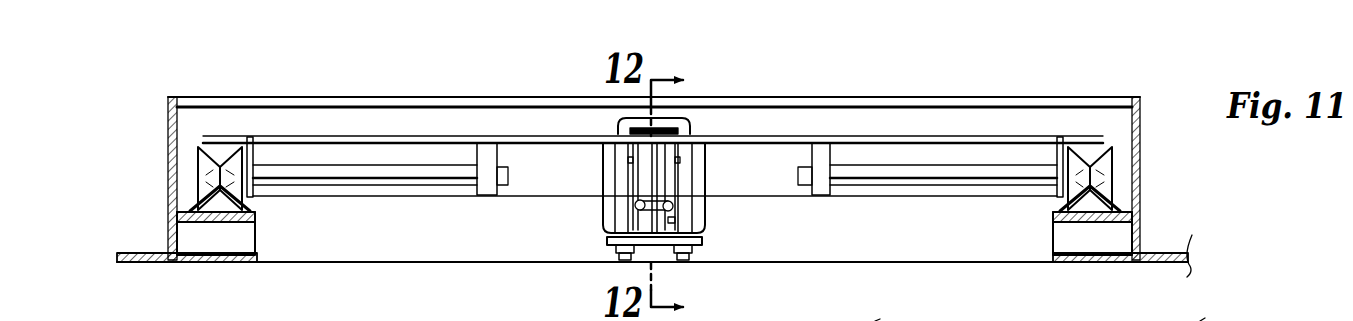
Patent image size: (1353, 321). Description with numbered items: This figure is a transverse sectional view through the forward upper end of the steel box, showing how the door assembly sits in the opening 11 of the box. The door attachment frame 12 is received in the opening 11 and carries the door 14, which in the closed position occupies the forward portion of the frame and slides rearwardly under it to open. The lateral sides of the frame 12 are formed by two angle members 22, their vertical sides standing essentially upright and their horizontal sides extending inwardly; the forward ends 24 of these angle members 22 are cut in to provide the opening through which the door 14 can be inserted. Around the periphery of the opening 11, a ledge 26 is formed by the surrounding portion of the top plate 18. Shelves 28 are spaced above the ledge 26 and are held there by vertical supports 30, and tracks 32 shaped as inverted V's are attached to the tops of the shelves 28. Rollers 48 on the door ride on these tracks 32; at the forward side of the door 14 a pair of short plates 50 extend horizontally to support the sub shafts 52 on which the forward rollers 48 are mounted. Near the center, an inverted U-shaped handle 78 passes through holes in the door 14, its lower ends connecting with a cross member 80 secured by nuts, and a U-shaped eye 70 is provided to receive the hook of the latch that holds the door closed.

The opening 11 is at (1030, 258).
The door attachment frame 12 is at (1143, 123).
The door 14 is at (922, 138).
The top plate 18 is at (208, 260).
The angle members 22 is at (891, 315).
The forward ends 24 is at (1216, 311).
The ledge 26 is at (257, 257).
The shelves 28 is at (210, 230).
The vertical supports 30 is at (243, 237).
The tracks 32 is at (195, 207).
The rollers 48 is at (200, 172).
The short plates 50 is at (485, 187).
The sub shafts 52 is at (380, 182).
The U-shaped member or eye 70 is at (638, 207).
The U-shaped handle 78 is at (690, 122).
The cross member 80 is at (608, 240).